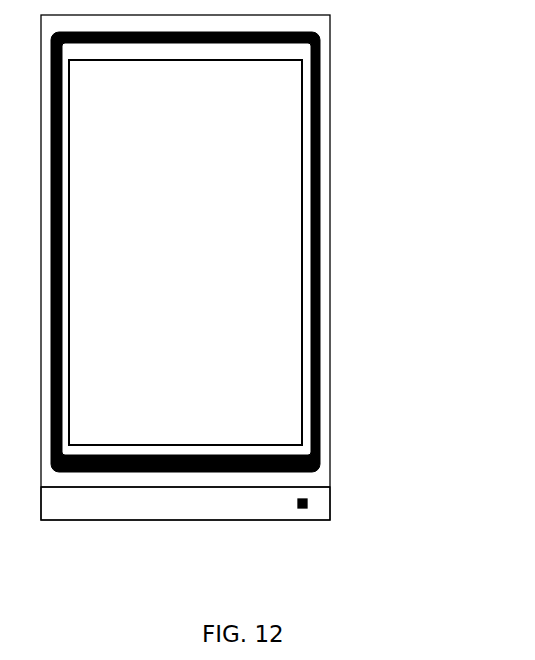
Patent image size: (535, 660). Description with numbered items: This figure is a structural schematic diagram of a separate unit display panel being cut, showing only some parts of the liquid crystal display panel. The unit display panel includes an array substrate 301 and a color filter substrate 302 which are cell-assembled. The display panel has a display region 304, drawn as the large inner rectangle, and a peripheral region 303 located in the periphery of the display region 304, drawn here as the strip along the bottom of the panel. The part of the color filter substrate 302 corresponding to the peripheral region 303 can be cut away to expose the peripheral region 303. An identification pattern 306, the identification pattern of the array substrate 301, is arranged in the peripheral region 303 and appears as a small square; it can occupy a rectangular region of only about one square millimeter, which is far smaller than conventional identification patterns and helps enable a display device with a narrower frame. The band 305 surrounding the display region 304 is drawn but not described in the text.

The array substrate 301 is at (310, 523).
The color filter substrate 302 is at (62, 491).
The peripheral region 303 is at (181, 501).
The display region 304 is at (245, 200).
The sealing band 305 is at (319, 243).
The identification pattern 306 is at (311, 503).